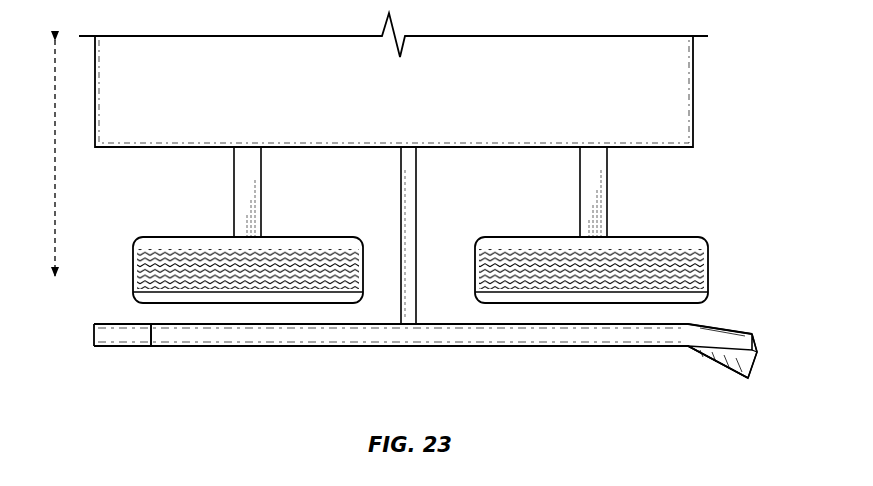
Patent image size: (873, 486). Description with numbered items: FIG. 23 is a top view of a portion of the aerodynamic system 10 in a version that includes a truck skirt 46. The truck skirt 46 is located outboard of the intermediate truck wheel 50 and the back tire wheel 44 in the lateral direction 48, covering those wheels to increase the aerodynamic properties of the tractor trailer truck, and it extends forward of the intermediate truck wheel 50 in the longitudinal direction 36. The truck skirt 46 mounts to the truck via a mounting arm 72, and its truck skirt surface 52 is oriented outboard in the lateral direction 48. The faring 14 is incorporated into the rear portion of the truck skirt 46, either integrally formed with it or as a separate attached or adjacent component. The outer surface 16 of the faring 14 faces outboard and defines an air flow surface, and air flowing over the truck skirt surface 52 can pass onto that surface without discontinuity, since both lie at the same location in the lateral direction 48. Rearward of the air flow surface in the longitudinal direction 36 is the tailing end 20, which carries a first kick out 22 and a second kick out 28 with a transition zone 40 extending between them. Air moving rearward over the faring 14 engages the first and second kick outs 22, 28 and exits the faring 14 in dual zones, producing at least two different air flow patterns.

The aerodynamic system 10 is at (778, 170).
The faring 14 is at (94, 334).
The outer surface 16 is at (572, 354).
The tailing end 20 is at (706, 325).
The first kick out 22 is at (722, 340).
The second kick out 28 is at (741, 379).
The longitudinal direction 36 is at (343, 87).
The transition zone 40 is at (755, 357).
The back tire wheel 44 is at (658, 238).
The truck skirt 46 is at (183, 350).
The lateral direction 48 is at (53, 160).
The intermediate truck wheel 50 is at (133, 265).
The truck skirt surface 52 is at (338, 354).
The mounting arm 72 is at (411, 218).